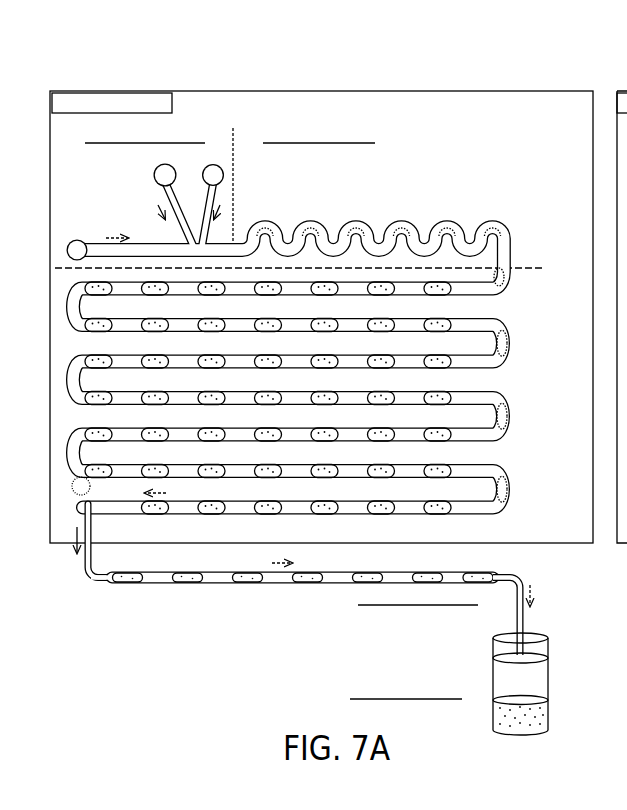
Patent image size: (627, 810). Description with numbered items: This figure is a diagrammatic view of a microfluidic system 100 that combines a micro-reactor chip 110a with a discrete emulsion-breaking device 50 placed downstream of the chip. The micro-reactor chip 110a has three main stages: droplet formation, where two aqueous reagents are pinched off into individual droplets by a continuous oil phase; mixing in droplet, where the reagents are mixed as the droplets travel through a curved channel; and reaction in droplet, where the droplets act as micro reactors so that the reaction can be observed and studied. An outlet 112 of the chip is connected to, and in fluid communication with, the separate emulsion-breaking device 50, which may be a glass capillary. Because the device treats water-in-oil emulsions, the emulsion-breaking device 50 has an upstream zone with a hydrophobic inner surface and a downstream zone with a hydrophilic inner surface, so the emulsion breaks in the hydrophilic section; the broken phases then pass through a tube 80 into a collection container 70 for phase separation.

The microfluidic system 100 is at (549, 78).
The micro-reactor chip 110a is at (444, 103).
The outlet 112 is at (80, 509).
The emulsion-breaking device 50 is at (293, 597).
The tube 80 is at (527, 576).
The phase separation container 70 is at (537, 680).